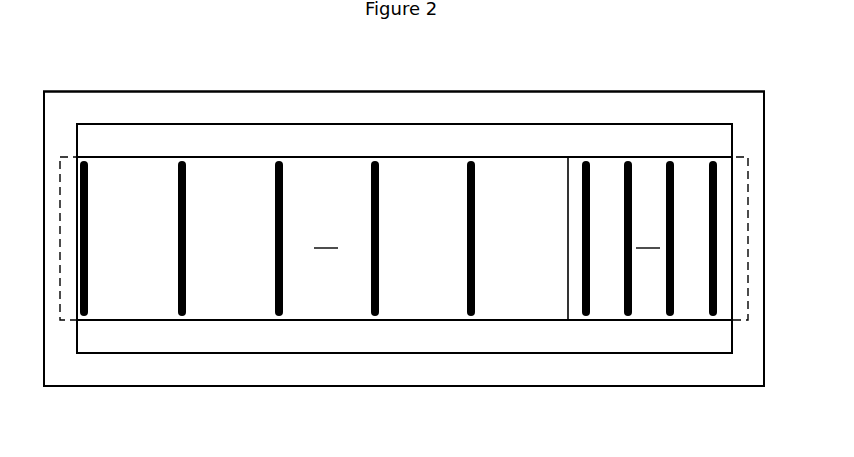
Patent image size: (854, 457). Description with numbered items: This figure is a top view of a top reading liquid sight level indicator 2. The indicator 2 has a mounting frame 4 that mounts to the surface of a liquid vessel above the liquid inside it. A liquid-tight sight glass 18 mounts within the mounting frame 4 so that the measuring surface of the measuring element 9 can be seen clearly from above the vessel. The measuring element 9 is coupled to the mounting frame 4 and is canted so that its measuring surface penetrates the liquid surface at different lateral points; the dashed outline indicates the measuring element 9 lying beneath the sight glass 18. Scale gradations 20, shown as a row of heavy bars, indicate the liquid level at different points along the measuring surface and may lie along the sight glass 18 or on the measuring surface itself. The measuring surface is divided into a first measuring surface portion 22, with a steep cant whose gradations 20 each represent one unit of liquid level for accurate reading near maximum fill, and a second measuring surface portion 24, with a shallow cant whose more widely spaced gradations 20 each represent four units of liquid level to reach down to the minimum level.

The top reading liquid sight level indicator 2 is at (694, 82).
The mounting frame 4 is at (109, 386).
The measuring element 9 is at (719, 154).
The sight glass 18 is at (265, 353).
The scale gradations 20 is at (476, 173).
The first measuring surface portion 22 is at (648, 238).
The second measuring surface portion 24 is at (441, 238).